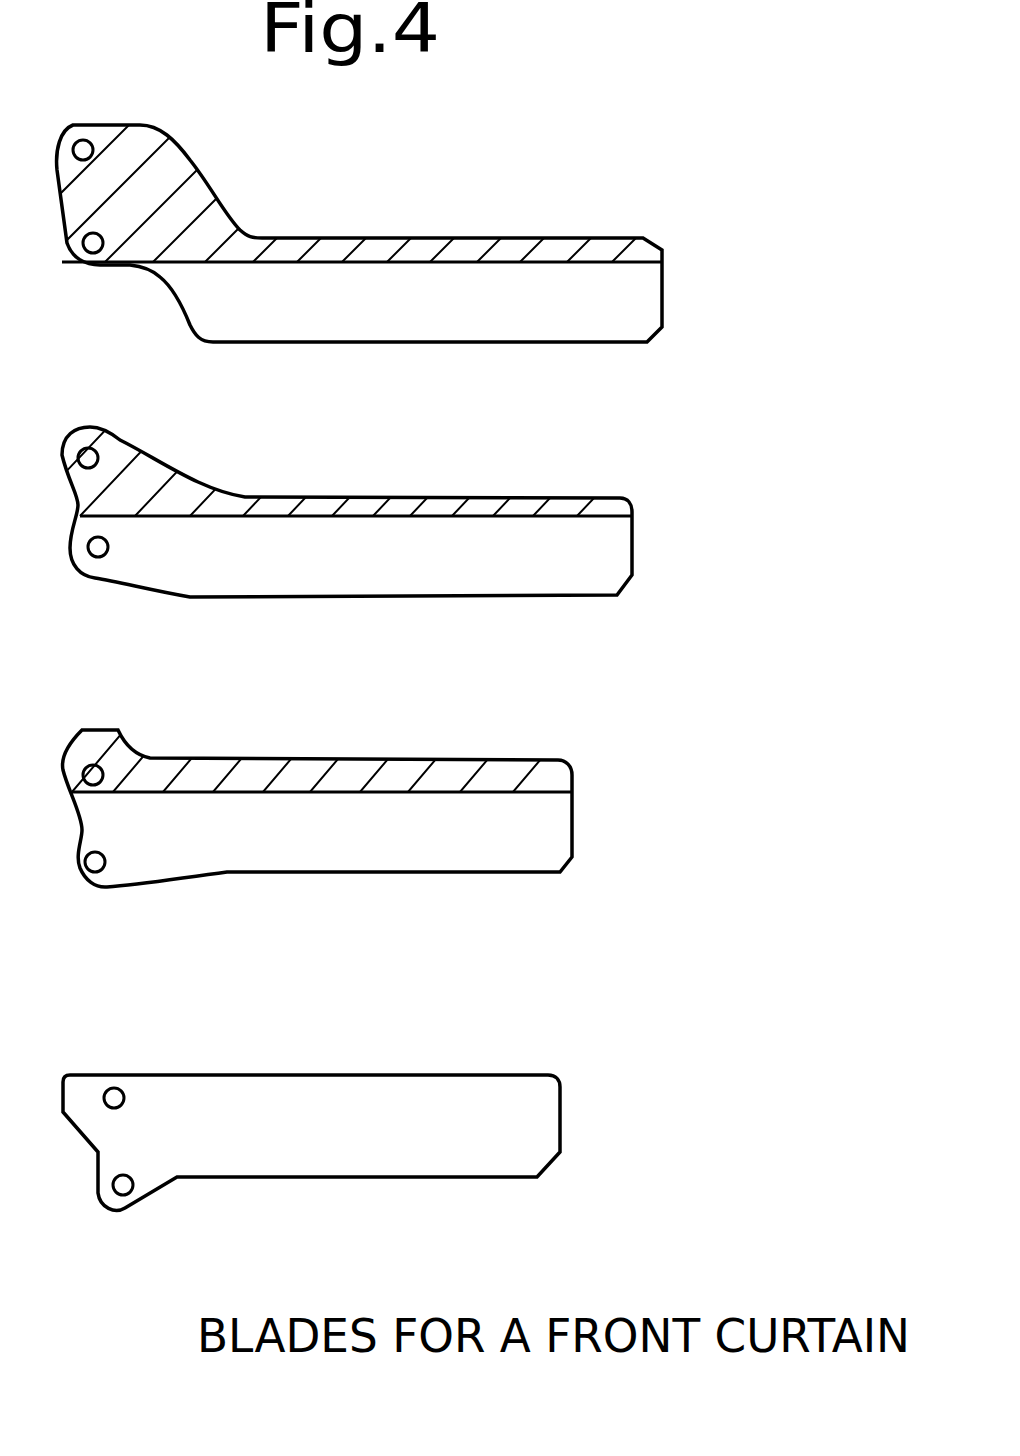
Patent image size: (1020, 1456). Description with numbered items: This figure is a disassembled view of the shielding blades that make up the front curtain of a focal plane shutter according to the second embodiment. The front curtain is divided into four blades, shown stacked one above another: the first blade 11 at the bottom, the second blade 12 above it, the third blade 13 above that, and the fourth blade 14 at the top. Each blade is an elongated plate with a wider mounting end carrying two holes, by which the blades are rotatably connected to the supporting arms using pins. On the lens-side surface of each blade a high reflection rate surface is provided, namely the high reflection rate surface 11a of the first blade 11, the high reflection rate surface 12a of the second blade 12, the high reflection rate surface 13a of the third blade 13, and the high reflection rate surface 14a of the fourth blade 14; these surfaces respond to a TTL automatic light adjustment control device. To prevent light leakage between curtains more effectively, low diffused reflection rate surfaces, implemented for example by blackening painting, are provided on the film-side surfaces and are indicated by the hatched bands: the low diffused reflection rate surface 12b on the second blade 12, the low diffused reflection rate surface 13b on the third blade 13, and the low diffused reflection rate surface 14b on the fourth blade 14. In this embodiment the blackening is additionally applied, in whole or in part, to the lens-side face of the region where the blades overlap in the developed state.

The first blade 11 is at (411, 1176).
The high reflection rate surface 11a is at (362, 1157).
The second blade 12 is at (436, 822).
The high reflection rate surface 12a is at (353, 848).
The low diffused reflection rate surface 12b is at (317, 770).
The third blade 13 is at (423, 551).
The high reflection rate surface 13a is at (405, 572).
The low diffused reflection rate surface 13b is at (370, 500).
The fourth blade 14 is at (458, 271).
The high reflection rate surface 14a is at (483, 325).
The low diffused reflection rate surface 14b is at (467, 250).